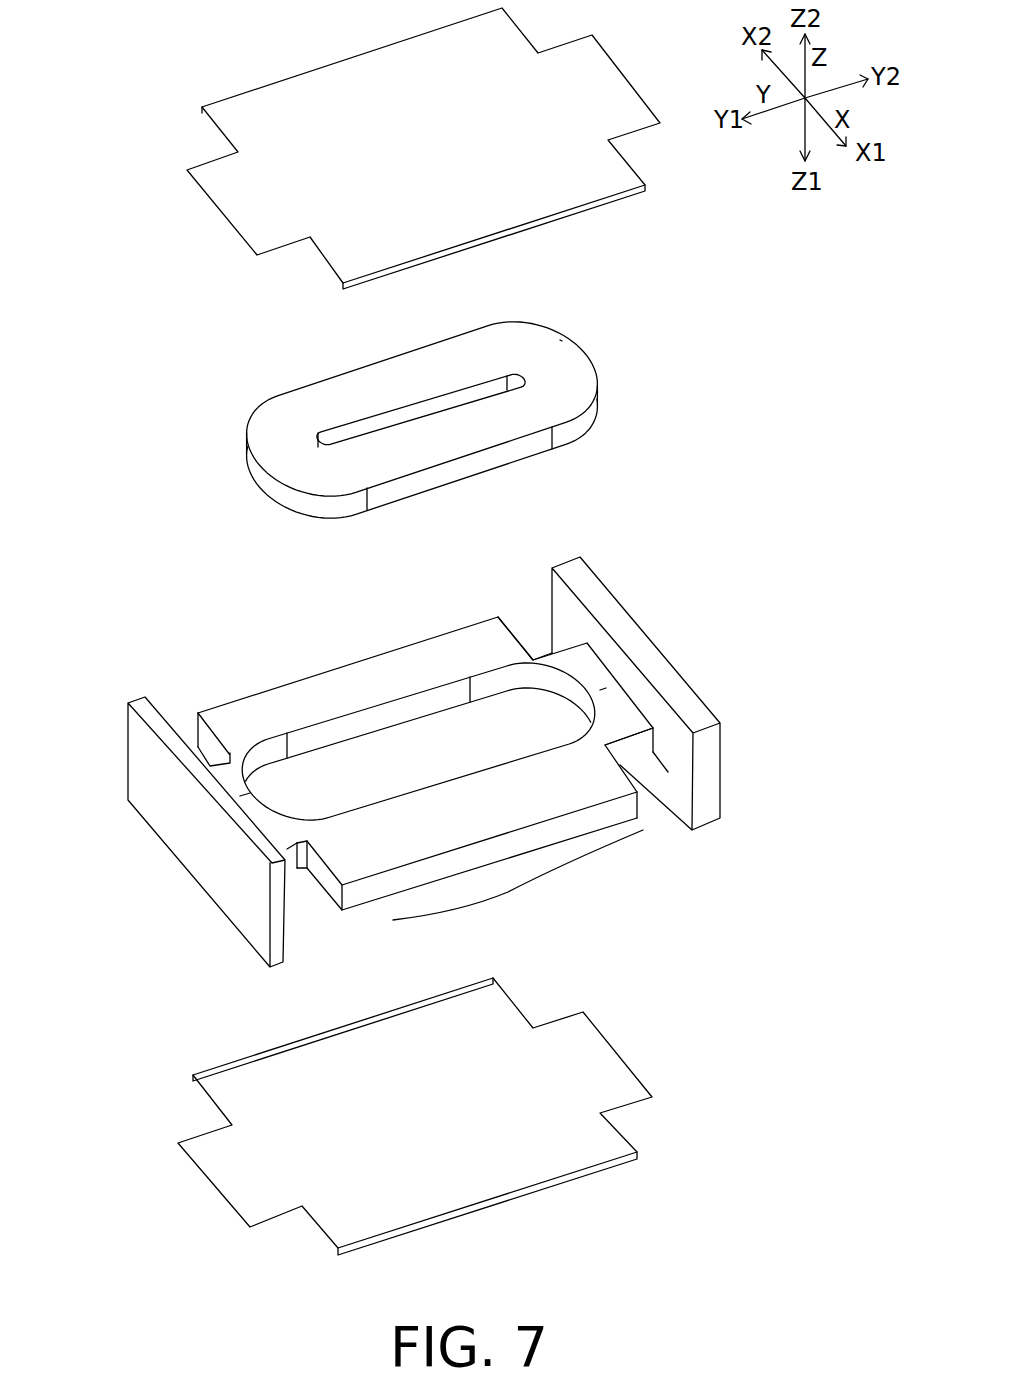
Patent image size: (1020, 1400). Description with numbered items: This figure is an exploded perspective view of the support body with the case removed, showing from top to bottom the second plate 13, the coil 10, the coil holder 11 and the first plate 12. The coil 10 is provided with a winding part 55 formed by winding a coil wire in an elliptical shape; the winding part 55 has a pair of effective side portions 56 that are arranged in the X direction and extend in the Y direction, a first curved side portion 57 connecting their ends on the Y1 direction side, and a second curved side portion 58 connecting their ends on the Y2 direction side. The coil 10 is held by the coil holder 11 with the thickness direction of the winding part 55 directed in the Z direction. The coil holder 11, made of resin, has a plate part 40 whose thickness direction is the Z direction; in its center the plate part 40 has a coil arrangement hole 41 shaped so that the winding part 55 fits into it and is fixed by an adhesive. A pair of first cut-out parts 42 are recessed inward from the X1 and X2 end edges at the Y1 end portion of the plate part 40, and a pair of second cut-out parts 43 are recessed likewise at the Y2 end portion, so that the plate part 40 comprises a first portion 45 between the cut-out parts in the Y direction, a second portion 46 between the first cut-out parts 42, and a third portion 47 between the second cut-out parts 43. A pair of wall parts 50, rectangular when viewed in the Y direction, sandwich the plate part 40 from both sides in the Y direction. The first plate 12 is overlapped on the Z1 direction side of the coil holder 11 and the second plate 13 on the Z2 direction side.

The coil 10 is at (384, 422).
The coil holder 11 is at (376, 753).
The first plate 12 is at (450, 1162).
The second plate 13 is at (337, 108).
The plate part 40 is at (404, 760).
The coil arrangement hole 41 is at (377, 717).
The first cut-out parts 42 is at (200, 750).
The second cut-out parts 43 is at (538, 638).
The first portion 45 is at (518, 877).
The second portion 46 is at (247, 800).
The third portion 47 is at (603, 692).
The wall parts 50 is at (607, 580).
The winding part 55 is at (267, 455).
The effective side portions 56 is at (448, 432).
The first curved side portion 57 is at (290, 473).
The second curved side portion 58 is at (573, 378).